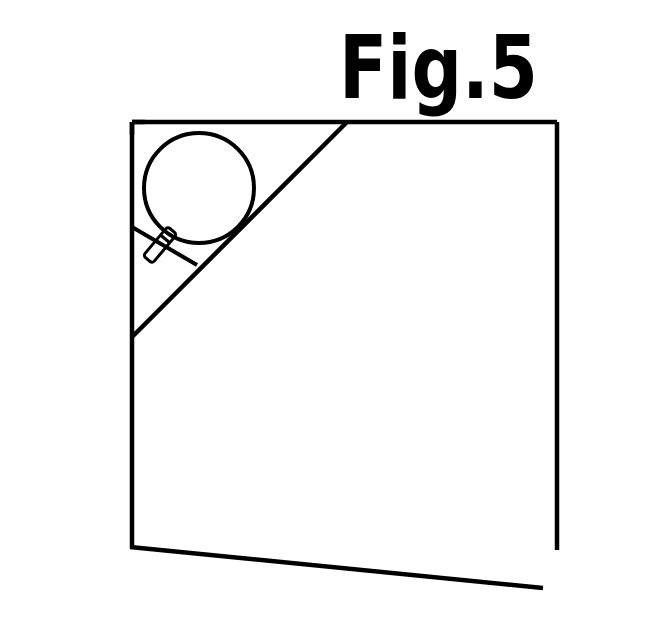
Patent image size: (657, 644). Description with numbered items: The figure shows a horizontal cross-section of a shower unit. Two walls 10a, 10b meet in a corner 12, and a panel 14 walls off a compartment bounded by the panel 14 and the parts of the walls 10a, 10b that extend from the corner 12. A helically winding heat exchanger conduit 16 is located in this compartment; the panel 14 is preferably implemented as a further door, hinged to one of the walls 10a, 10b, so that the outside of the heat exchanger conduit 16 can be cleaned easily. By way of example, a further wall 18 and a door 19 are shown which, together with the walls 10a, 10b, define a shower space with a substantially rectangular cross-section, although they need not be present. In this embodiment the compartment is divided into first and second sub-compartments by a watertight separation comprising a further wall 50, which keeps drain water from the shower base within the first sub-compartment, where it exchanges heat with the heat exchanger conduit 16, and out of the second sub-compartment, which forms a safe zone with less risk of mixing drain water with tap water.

The wall 10a is at (425, 124).
The wall 10b is at (133, 438).
The corner 12 is at (131, 122).
The panel 14 is at (190, 282).
The heat exchanger conduit 16 is at (237, 150).
The further wall 18 is at (556, 330).
The door 19 is at (401, 571).
The further wall 50 is at (186, 268).